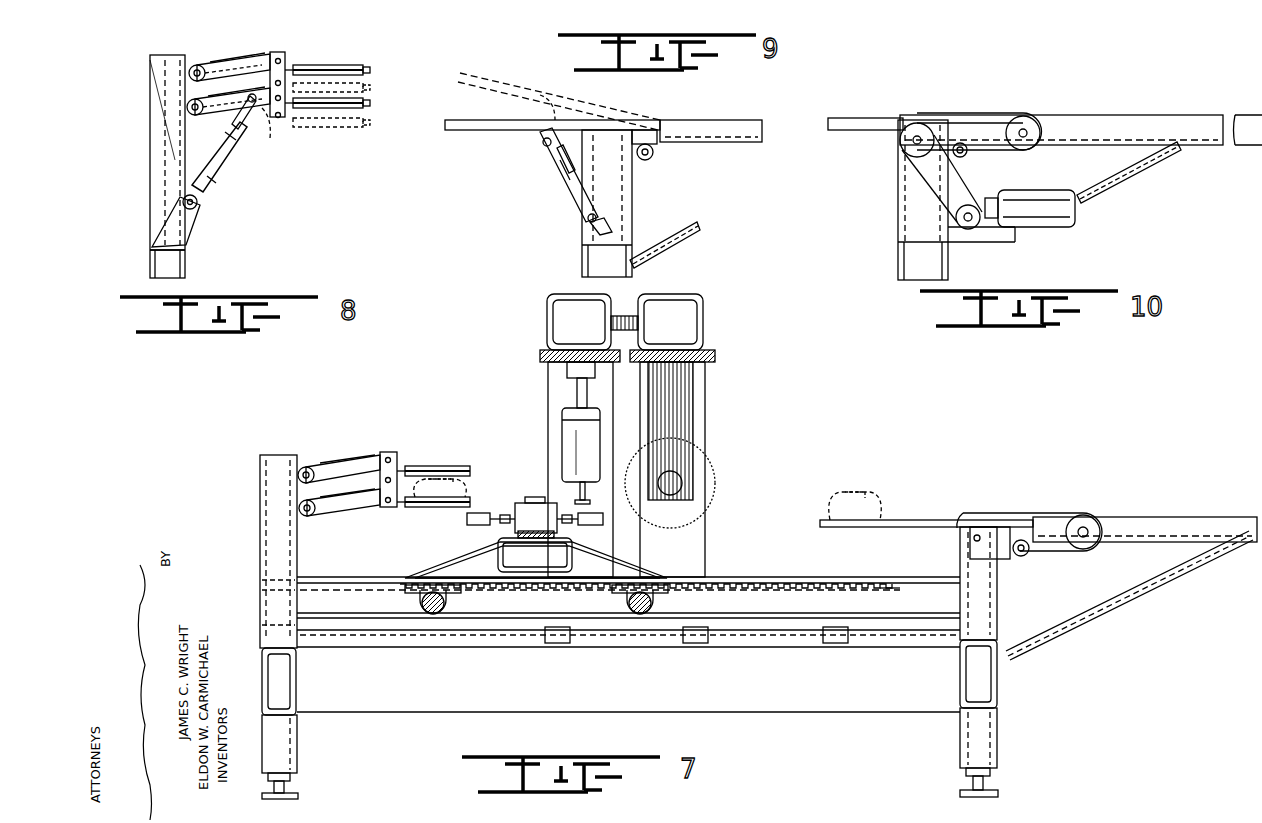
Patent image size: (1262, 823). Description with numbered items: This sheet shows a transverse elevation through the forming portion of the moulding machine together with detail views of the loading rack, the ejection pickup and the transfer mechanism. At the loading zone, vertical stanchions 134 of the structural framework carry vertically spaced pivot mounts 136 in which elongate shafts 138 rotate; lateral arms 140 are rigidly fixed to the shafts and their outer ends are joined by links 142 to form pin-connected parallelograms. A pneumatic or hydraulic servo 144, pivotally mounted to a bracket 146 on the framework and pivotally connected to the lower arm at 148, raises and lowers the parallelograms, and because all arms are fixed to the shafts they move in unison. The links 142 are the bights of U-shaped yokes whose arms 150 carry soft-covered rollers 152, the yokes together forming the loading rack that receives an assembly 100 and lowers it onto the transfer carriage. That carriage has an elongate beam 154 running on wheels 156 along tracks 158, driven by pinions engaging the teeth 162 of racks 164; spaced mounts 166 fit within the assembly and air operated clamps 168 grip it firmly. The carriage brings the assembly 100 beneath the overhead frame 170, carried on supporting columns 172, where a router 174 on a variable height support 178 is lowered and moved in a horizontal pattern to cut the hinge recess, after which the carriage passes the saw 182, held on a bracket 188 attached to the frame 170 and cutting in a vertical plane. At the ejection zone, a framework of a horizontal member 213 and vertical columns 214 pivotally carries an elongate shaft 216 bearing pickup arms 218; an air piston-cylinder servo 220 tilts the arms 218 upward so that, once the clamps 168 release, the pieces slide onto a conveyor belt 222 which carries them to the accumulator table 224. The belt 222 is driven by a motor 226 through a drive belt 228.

In FIG. 7, the assembly 100 is at (540, 497).
In FIG. 8, the vertical stanchion 134 is at (155, 175).
In FIG. 7, the vertical stanchion 134 is at (262, 490).
In FIG. 8, the pivot mount 136 is at (188, 69).
In FIG. 7, the pivot mount 136 is at (305, 465).
In FIG. 8, the elongate shaft 138 is at (197, 65).
In FIG. 7, the elongate shaft 138 is at (313, 467).
In FIG. 8, the lateral arm 140 is at (252, 62).
In FIG. 7, the lateral arm 140 is at (373, 455).
In FIG. 8, the link 142 is at (286, 58).
In FIG. 7, the link 142 is at (385, 508).
In FIG. 8, the servo 144 is at (220, 172).
In FIG. 8, the bracket 146 is at (192, 223).
In FIG. 8, the pivot connection 148 is at (260, 118).
In FIG. 8, the yoke arm 150 is at (368, 70).
In FIG. 7, the yoke arm 150 is at (472, 468).
In FIG. 8, the roller 152 is at (335, 60).
In FIG. 7, the roller 152 is at (430, 462).
In FIG. 7, the elongate beam 154 is at (532, 575).
In FIG. 7, the wheel 156 is at (665, 600).
In FIG. 7, the track 158 is at (752, 615).
In FIG. 7, the rack teeth 162 is at (817, 588).
In FIG. 7, the rack 164 is at (884, 583).
In FIG. 7, the mount 166 is at (558, 530).
In FIG. 7, the air operated clamp 168 is at (475, 526).
In FIG. 7, the overhead frame 170 is at (547, 310).
In FIG. 7, the supporting column 172 is at (550, 372).
In FIG. 7, the router 174 is at (562, 428).
In FIG. 7, the variable height support 178 is at (575, 390).
In FIG. 7, the saw 182 is at (715, 475).
In FIG. 7, the bracket 188 is at (695, 405).
In FIG. 8, the horizontal member 213 is at (187, 268).
In FIG. 9, the horizontal member 213 is at (583, 262).
In FIG. 10, the horizontal member 213 is at (900, 257).
In FIG. 7, the horizontal member 213 is at (297, 685).
In FIG. 7, the vertical column 214 is at (297, 748).
In FIG. 9, the elongate shaft 216 is at (653, 153).
In FIG. 7, the elongate shaft 216 is at (1025, 555).
In FIG. 9, the pickup arm 218 is at (575, 92).
In FIG. 10, the pickup arm 218 is at (860, 118).
In FIG. 7, the pickup arm 218 is at (923, 520).
In FIG. 9, the air piston-cylinder servo 220 is at (575, 195).
In FIG. 10, the conveyor belt 222 is at (973, 118).
In FIG. 7, the conveyor belt 222 is at (1053, 515).
In FIG. 9, the accumulator rack or table 224 is at (712, 125).
In FIG. 10, the accumulator rack or table 224 is at (1153, 117).
In FIG. 7, the accumulator rack or table 224 is at (1183, 517).
In FIG. 10, the motor 226 is at (1078, 215).
In FIG. 10, the drive belt 228 is at (968, 187).